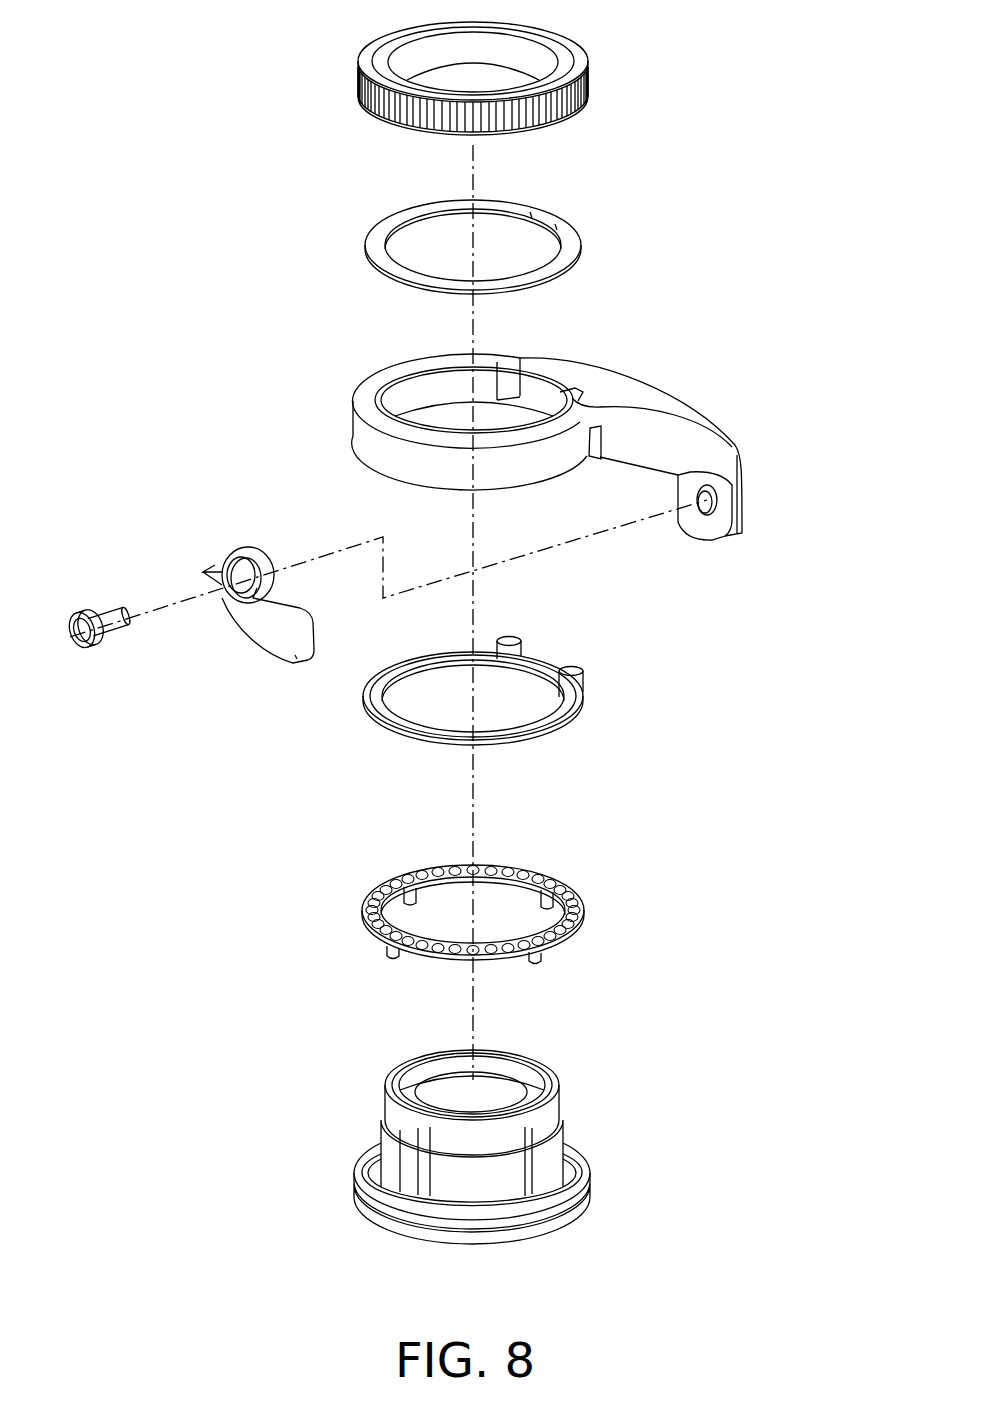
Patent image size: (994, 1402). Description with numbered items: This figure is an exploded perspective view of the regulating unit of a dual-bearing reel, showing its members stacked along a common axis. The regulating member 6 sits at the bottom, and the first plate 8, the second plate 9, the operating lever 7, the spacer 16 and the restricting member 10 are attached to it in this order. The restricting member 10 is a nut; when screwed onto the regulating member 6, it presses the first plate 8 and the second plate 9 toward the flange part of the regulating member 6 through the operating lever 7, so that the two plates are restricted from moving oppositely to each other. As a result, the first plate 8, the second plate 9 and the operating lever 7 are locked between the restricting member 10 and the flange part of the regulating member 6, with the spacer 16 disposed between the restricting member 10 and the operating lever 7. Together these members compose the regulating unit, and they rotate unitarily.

The restricting member 10 is at (622, 47).
The spacer 16 is at (623, 233).
The operating lever 7 is at (692, 370).
The second plate 9 is at (622, 668).
The first plate 8 is at (620, 907).
The regulating member 6 is at (620, 1100).